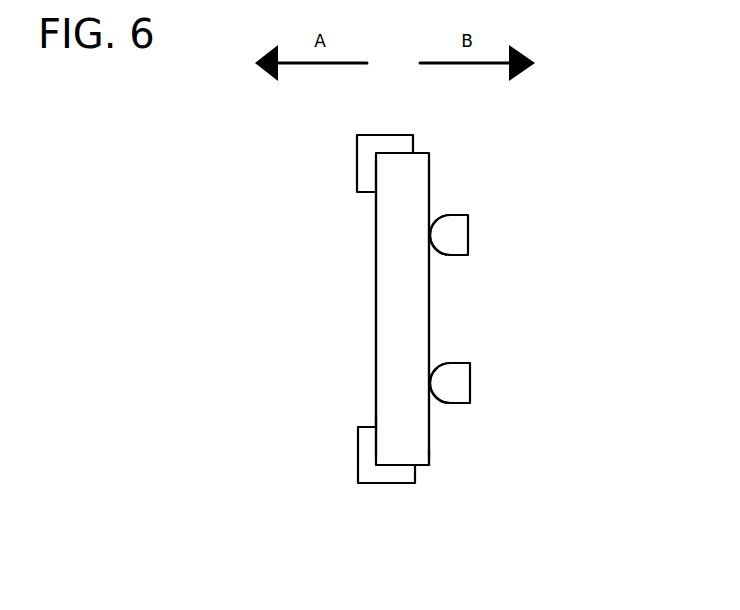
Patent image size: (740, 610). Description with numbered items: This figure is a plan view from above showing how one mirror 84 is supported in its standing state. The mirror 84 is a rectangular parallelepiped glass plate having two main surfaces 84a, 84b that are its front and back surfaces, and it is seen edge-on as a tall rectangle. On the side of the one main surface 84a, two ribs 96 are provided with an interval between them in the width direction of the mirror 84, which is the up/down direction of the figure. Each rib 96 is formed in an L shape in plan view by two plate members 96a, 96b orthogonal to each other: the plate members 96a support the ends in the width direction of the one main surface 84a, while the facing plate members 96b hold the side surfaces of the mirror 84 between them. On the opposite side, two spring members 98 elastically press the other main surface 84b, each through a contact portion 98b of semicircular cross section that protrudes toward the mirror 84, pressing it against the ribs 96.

The mirror 84 is at (385, 306).
The one main surface 84a is at (376, 253).
The other main surface 84b is at (430, 183).
The rib 96 is at (373, 146).
The plate member 96a is at (367, 447).
The plate member 96b is at (412, 448).
The spring member 98 is at (450, 232).
The contact portion 98b is at (413, 238).